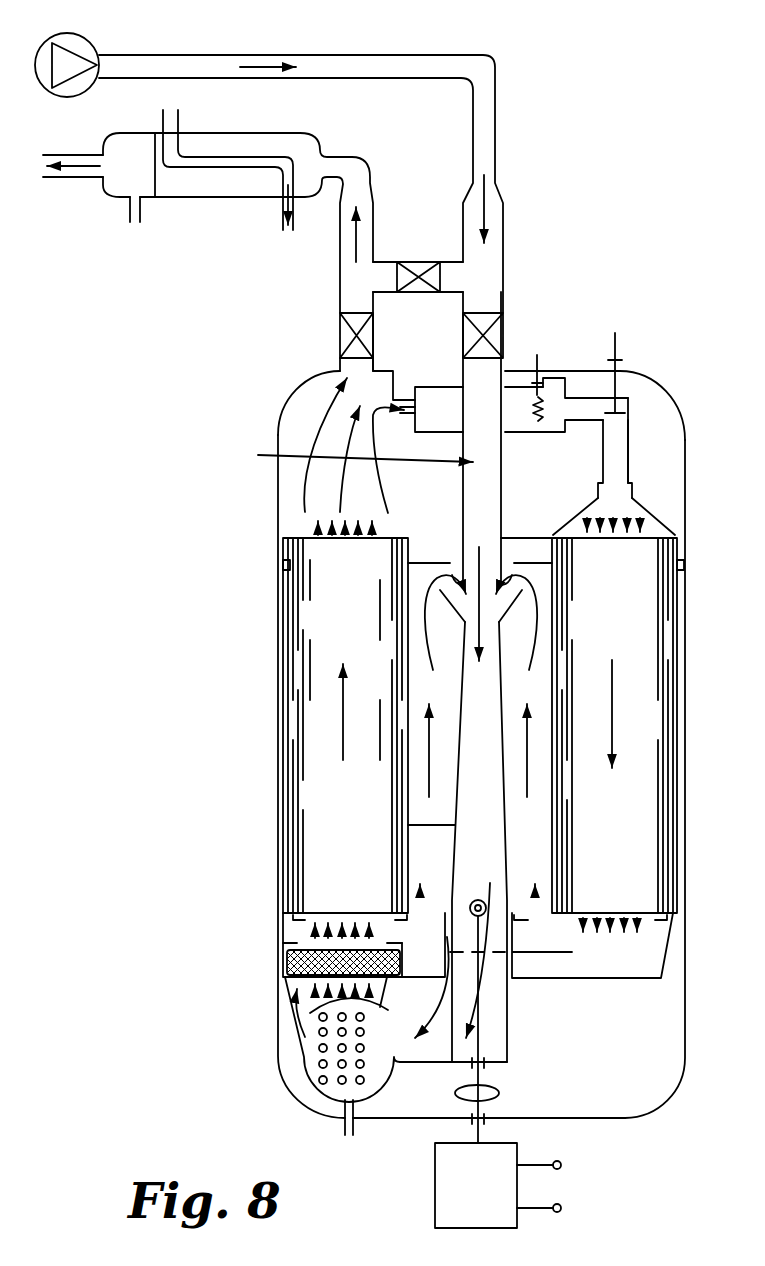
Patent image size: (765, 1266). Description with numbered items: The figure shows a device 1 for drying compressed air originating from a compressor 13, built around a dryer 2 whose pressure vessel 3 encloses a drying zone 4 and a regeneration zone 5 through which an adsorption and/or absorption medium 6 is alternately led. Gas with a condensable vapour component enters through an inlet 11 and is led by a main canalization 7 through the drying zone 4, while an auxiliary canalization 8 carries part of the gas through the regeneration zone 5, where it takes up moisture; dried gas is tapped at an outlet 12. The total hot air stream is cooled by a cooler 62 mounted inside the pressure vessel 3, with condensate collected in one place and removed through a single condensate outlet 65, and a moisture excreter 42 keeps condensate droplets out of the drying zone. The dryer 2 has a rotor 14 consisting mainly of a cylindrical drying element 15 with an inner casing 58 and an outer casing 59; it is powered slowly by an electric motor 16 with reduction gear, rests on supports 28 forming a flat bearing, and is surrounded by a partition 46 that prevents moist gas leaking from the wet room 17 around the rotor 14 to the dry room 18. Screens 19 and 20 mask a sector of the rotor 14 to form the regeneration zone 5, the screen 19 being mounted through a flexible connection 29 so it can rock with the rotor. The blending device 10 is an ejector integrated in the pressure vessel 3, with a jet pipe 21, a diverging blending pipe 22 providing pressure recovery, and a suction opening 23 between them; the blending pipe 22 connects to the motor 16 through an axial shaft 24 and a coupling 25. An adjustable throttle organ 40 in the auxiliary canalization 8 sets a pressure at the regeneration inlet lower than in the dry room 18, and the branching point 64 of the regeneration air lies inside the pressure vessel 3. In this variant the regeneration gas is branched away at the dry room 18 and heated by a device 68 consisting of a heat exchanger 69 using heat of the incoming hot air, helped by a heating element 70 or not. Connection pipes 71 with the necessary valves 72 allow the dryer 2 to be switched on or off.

The device 1 is at (168, 986).
The dryer 2 is at (229, 538).
The pressure vessel 3 is at (687, 433).
The drying zone 4 is at (316, 746).
The regeneration zone 5 is at (644, 680).
The adsorption and/or absorption medium 6 is at (641, 853).
The main canalization 7 is at (371, 438).
The auxiliary canalization 8 is at (638, 430).
The blending device 10 is at (520, 544).
The inlet 11 is at (122, 63).
The outlet 12 is at (80, 178).
The compressor 13 is at (89, 43).
The rotor 14 is at (283, 623).
The drying element 15 is at (334, 794).
The electric motor 16 is at (447, 1188).
The wet room 17 is at (427, 1064).
The dry room 18 is at (297, 398).
The screen 19 is at (647, 513).
The screen 20 is at (630, 979).
The jet pipe 21 is at (445, 563).
The blending pipe 22 is at (453, 826).
The suction opening 23 is at (500, 613).
The axial shaft 24 is at (488, 1078).
The coupling 25 is at (488, 900).
The supports 28 is at (385, 889).
The flexible connection 29 is at (653, 460).
The adjustable throttle organ 40 is at (598, 400).
The moisture excreter 42 is at (287, 955).
The partition 46 is at (283, 564).
The inner casing 58 is at (413, 678).
The outer casing 59 is at (283, 655).
The cooler 62 is at (298, 1058).
The branching point 64 is at (397, 396).
The condensate outlet 65 is at (345, 1125).
The heating device 68 is at (558, 368).
The heat exchanger 69 is at (432, 388).
The heating element 70 is at (532, 404).
The connection pipes 71 is at (384, 264).
The valves 72 is at (412, 264).